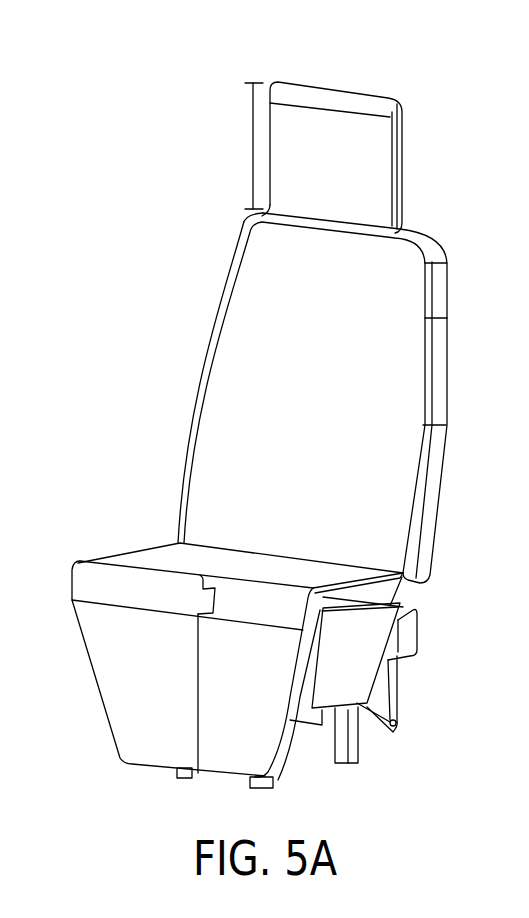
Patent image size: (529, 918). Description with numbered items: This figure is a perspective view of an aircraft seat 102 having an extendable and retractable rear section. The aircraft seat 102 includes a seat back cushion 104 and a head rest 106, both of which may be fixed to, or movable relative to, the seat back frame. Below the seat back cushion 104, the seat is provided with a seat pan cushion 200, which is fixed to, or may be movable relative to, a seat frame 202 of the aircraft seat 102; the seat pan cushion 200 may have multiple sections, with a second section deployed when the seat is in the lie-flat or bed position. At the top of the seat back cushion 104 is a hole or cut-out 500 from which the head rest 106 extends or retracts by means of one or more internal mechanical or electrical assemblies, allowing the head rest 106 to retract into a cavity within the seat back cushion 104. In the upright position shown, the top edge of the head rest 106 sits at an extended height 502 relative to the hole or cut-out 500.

The aircraft seat 102 is at (208, 62).
The seat back cushion 104 is at (213, 338).
The head rest 106 is at (330, 125).
The seat pan cushion 200 is at (157, 558).
The seat frame 202 is at (352, 748).
The hole or cut-out 500 is at (397, 223).
The extended height 502 is at (253, 147).